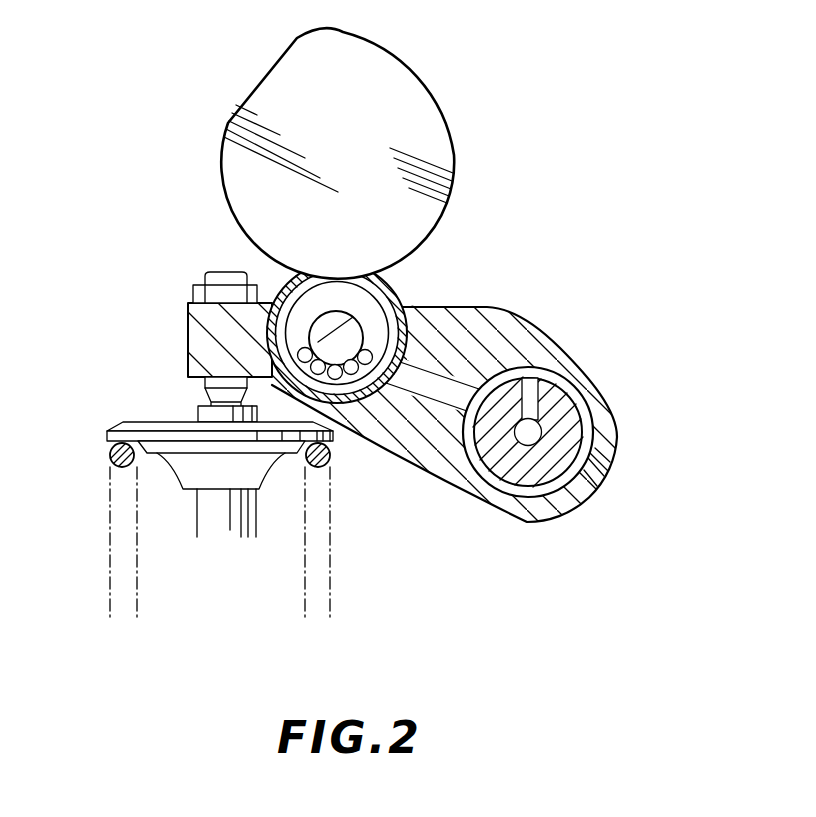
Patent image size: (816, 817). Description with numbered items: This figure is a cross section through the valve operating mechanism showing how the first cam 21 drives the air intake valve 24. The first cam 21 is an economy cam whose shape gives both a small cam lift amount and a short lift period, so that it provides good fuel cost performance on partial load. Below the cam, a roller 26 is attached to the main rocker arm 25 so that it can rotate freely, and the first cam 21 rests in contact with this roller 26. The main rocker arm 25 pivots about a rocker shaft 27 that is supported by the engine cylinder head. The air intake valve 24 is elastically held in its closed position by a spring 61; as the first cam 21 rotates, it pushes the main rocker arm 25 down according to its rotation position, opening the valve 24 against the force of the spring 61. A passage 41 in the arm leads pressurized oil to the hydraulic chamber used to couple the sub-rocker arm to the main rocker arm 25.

The first cam 21 is at (400, 73).
The air intake valve 24 is at (227, 512).
The main rocker arm 25 is at (180, 336).
The roller 26 is at (373, 284).
The rocker shaft 27 is at (543, 496).
The passage 41 is at (458, 395).
The spring 61 is at (112, 452).